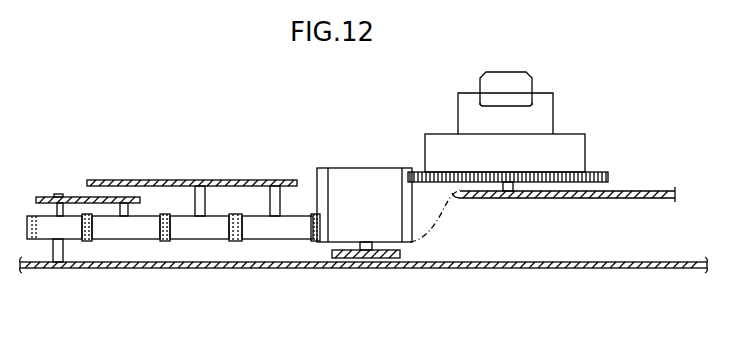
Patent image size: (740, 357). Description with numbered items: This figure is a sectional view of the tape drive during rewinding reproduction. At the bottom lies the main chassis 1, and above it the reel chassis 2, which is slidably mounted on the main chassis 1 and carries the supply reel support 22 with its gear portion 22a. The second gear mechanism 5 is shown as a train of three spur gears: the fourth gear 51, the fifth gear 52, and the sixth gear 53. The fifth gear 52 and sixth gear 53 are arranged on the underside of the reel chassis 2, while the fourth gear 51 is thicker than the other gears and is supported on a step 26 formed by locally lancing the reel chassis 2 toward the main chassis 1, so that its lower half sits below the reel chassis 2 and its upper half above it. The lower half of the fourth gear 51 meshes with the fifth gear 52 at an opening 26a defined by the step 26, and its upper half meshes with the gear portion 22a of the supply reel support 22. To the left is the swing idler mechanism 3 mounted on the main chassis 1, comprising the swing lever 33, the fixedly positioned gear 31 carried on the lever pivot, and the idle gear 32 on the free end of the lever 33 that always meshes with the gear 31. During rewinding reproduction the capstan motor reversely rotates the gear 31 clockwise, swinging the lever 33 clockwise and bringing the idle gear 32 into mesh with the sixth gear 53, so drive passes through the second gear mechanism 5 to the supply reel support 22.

The main chassis 1 is at (675, 262).
The reel chassis 2 is at (238, 180).
The swing idler mechanism 3 is at (135, 129).
The fixedly positioned gear 31 is at (43, 227).
The idle gear 32 is at (108, 227).
The swing lever 33 is at (75, 197).
The second gear mechanism 5 is at (277, 318).
The fourth gear 51 is at (317, 242).
The fifth gear 52 is at (257, 228).
The sixth gear 53 is at (182, 230).
The supply reel support 22 is at (547, 120).
The gear portion 22a is at (600, 173).
The step 26 is at (380, 257).
The opening 26a is at (343, 225).